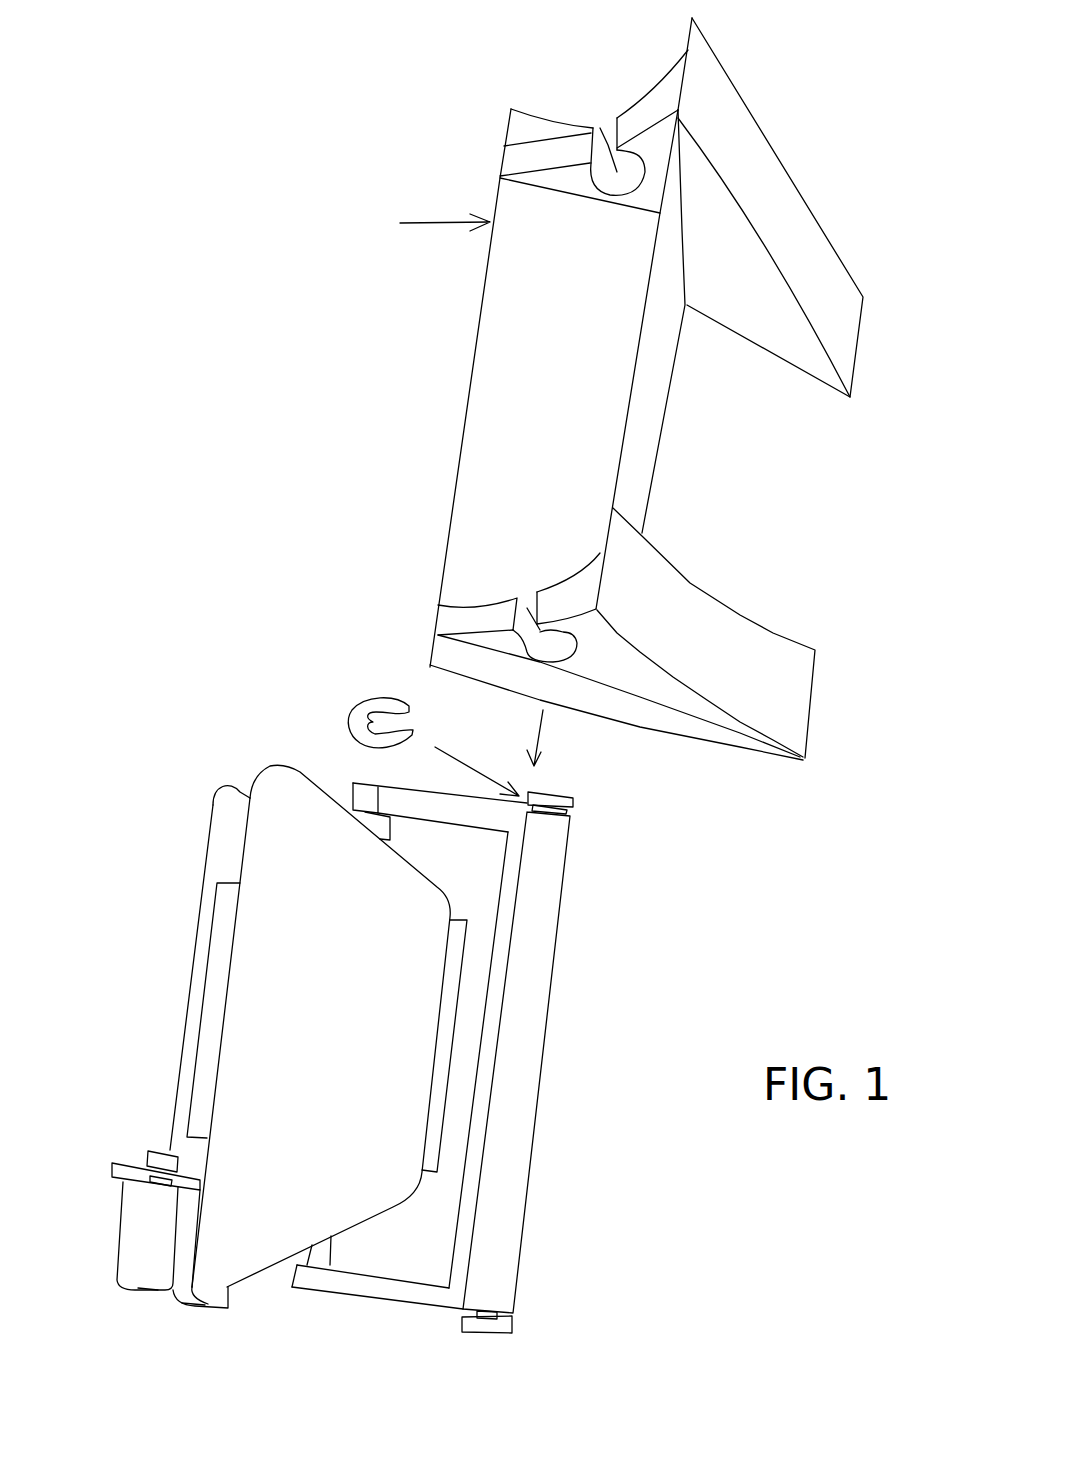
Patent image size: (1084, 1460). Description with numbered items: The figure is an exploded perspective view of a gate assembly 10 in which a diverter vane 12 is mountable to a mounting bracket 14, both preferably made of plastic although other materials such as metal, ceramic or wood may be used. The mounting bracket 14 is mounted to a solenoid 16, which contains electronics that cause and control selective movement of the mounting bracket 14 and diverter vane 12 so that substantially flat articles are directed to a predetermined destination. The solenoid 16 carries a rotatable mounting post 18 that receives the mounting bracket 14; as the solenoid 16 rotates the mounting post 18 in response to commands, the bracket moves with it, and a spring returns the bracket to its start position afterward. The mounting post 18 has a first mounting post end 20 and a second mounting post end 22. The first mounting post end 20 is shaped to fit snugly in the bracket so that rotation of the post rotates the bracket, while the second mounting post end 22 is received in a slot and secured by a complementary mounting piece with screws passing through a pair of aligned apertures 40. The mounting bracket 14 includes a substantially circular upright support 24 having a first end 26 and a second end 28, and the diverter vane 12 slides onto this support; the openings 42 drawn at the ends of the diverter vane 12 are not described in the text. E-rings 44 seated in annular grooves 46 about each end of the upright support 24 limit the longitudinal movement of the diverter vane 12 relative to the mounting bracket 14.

The gate assembly 10 is at (222, 425).
The diverter vane 12 is at (784, 205).
The mounting bracket 14 is at (582, 939).
The solenoid 16 is at (252, 1012).
The rotatable mounting post 18 is at (390, 833).
The first mounting post end 20 is at (332, 1257).
The second mounting post end 22 is at (357, 807).
The upright support 24 is at (550, 857).
The first end 26 is at (500, 1302).
The second end 28 is at (560, 822).
The aligned apertures 40 is at (503, 1317).
The keyhole slot 42 is at (607, 150).
The E-rings 44 is at (380, 695).
The annular grooves 46 is at (558, 790).